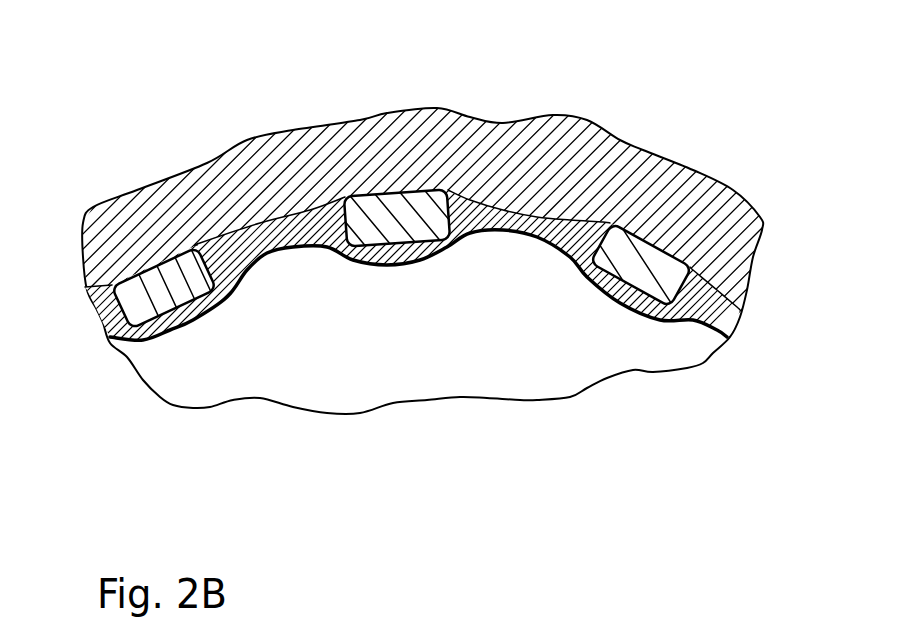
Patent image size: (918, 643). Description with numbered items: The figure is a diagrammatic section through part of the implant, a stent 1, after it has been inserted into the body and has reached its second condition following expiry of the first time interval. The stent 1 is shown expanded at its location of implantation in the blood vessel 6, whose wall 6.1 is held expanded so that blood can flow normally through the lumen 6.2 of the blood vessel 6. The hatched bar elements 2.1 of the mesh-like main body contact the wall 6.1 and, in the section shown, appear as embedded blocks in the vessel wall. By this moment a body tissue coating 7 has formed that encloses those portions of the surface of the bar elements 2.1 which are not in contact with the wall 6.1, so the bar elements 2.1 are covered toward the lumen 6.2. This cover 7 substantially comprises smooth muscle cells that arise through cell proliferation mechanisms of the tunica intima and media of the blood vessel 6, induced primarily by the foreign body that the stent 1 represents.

The stent 1 is at (184, 332).
The bar elements 2.1 is at (397, 217).
The blood vessel 6 is at (472, 110).
The wall of the blood vessel 6.1 is at (577, 147).
The lumen of the blood vessel 6.2 is at (447, 365).
The body tissue coating 7 is at (527, 220).